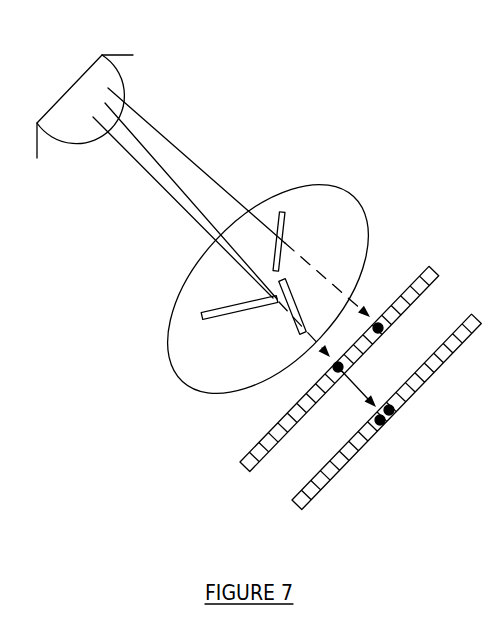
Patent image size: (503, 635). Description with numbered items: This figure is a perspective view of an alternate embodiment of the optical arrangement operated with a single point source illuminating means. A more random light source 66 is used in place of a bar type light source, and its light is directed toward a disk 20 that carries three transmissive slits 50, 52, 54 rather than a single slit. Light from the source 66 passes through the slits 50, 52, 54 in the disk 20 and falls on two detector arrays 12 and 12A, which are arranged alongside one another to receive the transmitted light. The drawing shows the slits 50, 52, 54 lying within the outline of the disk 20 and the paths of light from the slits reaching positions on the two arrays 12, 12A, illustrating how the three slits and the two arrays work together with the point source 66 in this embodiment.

The light source 66 is at (82, 127).
The disk 20 is at (338, 205).
The slit 52 is at (285, 220).
The slit 54 is at (290, 322).
The slit 50 is at (232, 318).
The array 12 is at (246, 454).
The array 12A is at (308, 484).